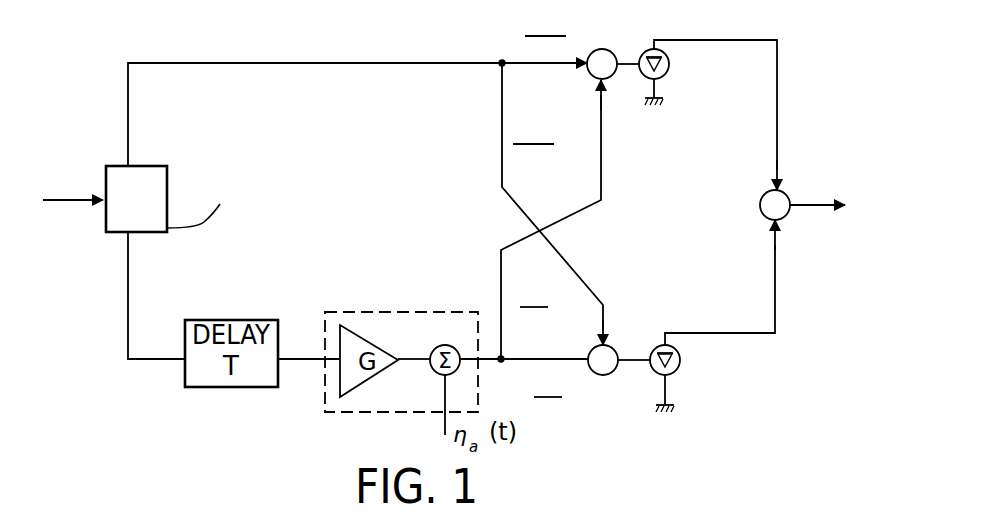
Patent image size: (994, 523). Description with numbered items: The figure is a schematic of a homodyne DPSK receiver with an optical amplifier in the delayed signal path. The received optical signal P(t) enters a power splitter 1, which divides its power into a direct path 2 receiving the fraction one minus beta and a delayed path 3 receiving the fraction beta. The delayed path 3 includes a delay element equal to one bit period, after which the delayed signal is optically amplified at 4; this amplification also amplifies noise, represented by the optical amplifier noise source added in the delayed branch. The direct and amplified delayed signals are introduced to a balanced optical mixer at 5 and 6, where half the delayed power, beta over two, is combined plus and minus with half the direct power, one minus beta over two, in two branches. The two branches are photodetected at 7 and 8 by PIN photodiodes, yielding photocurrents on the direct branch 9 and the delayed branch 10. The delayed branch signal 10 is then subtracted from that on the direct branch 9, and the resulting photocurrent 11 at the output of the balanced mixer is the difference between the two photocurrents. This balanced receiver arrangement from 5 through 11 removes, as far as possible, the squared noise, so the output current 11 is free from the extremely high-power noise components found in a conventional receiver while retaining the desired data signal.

The power splitter 1 is at (158, 203).
The direct path 2 is at (343, 114).
The delayed path 3 is at (142, 295).
The optical amplification 4 is at (309, 340).
The balanced optical mixer input 5 is at (549, 253).
The balanced optical mixer input 6 is at (540, 177).
The photodetection point 7 is at (625, 364).
The photodetection point 8 is at (614, 54).
The direct branch 9 is at (720, 96).
The delayed branch signal 10 is at (742, 302).
The resulting photocurrent 11 is at (796, 207).